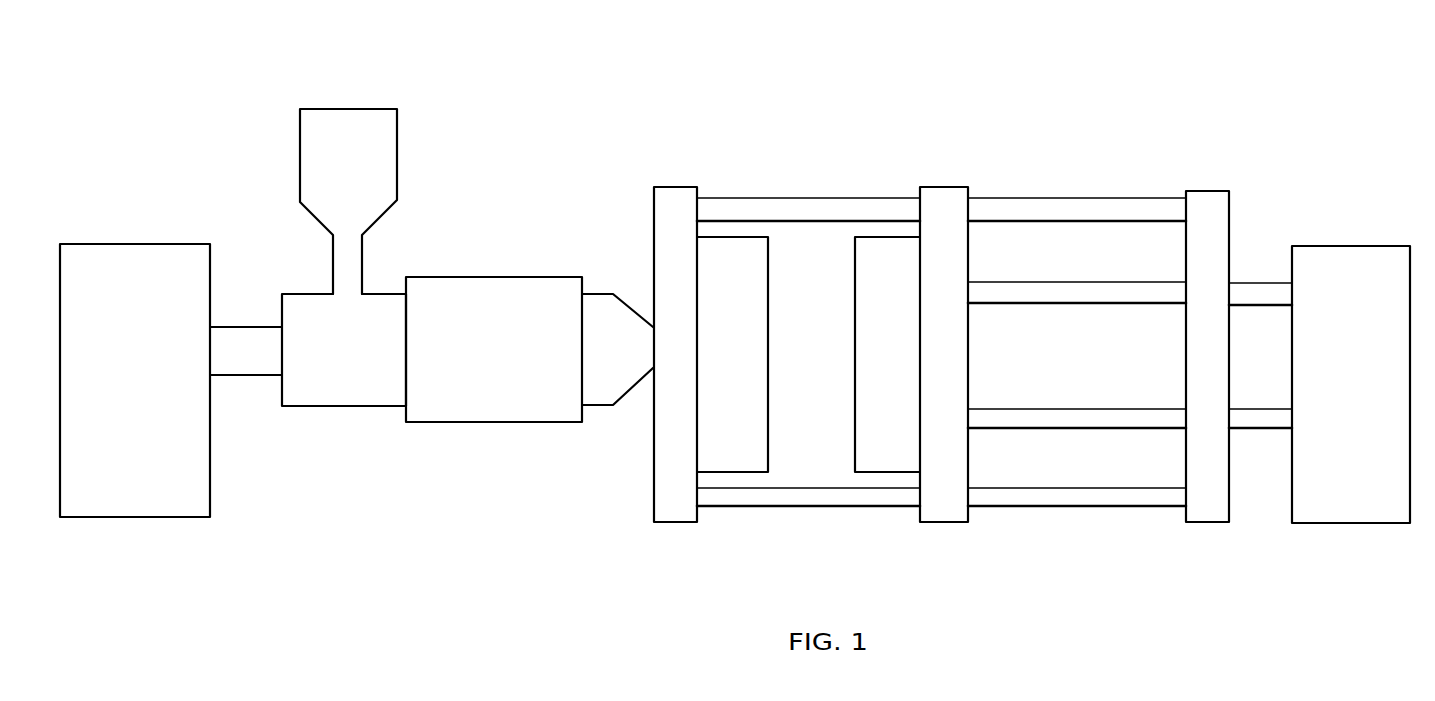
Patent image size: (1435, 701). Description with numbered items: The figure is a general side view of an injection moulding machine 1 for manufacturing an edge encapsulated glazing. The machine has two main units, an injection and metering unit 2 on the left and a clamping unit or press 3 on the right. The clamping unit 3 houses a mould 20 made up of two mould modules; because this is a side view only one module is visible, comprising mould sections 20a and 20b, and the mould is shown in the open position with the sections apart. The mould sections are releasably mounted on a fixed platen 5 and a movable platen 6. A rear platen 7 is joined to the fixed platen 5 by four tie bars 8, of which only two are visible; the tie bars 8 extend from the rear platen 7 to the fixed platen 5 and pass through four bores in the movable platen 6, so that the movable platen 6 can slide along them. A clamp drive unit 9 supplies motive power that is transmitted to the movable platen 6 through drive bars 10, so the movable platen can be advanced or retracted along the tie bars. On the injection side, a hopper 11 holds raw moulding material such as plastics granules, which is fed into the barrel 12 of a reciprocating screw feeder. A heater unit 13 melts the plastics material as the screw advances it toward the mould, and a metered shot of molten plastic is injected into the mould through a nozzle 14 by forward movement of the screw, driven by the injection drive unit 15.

The injection moulding machine 1 is at (612, 126).
The injection and metering unit 2 is at (362, 72).
The clamping unit 3 is at (1105, 90).
The fixed platen 5 is at (668, 198).
The movable platen 6 is at (934, 198).
The rear platen 7 is at (1202, 206).
The tie bars 8 is at (811, 205).
The clamp drive unit 9 is at (1325, 255).
The drive bars 10 is at (1062, 292).
The hopper 11 is at (385, 183).
The barrel 12 is at (368, 312).
The heater unit 13 is at (520, 290).
The nozzle 14 is at (635, 336).
The injection drive unit 15 is at (162, 258).
The mould 20 is at (808, 354).
The mould section 20a is at (757, 283).
The mould section 20b is at (873, 393).